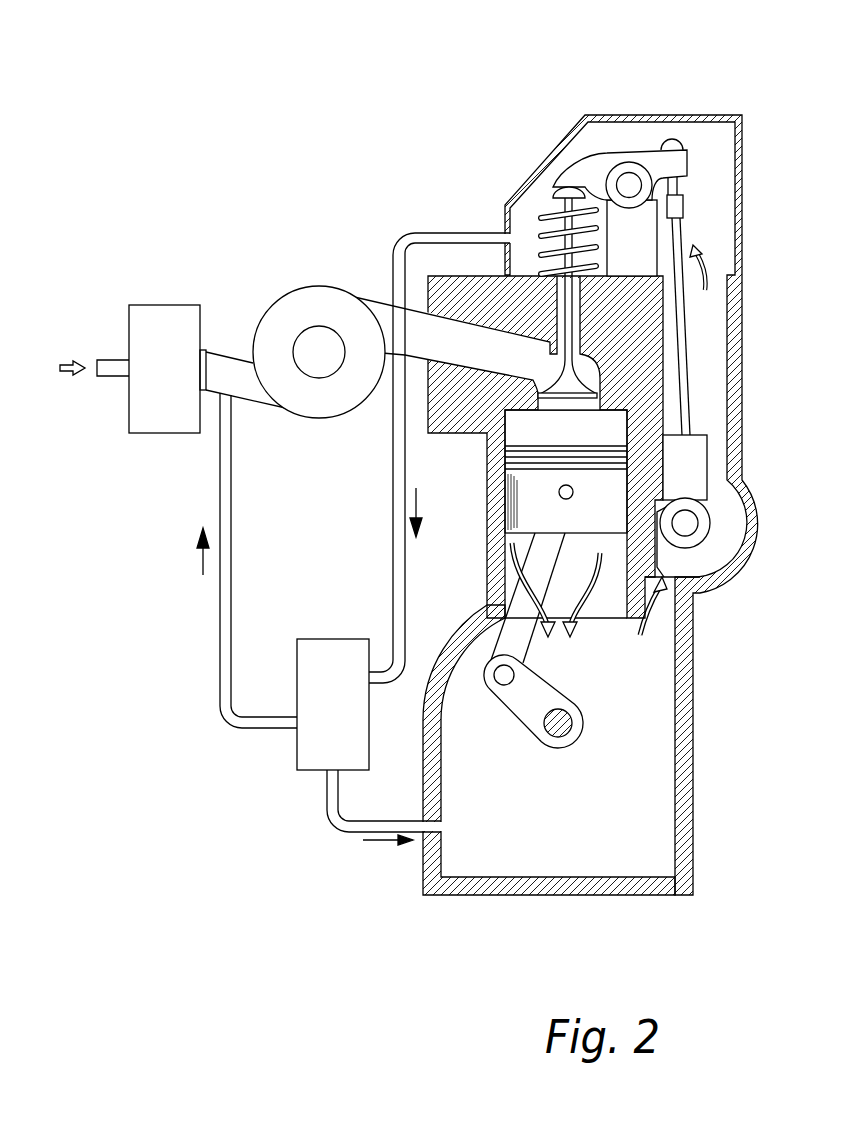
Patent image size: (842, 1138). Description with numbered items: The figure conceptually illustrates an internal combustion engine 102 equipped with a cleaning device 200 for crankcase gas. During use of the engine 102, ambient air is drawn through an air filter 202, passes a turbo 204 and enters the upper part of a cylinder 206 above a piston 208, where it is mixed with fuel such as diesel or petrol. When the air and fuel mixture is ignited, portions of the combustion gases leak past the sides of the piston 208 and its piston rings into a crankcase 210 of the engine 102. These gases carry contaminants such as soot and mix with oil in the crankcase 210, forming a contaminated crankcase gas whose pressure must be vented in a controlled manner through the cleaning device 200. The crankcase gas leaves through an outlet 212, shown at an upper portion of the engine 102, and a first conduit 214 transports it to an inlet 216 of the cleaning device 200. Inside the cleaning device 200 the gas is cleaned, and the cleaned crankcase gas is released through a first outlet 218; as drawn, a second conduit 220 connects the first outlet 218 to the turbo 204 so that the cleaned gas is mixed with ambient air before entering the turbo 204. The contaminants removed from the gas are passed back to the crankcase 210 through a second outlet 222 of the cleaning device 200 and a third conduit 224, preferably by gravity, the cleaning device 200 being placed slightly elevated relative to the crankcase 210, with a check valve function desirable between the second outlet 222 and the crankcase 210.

The internal combustion engine 102 is at (752, 60).
The cleaning device 200 is at (302, 768).
The air filter 202 is at (171, 305).
The turbo 204 is at (316, 287).
The cylinder 206 is at (617, 430).
The piston 208 is at (617, 500).
The crankcase 210 is at (655, 853).
The outlet 212 is at (502, 233).
The first conduit 214 is at (455, 233).
The inlet 216 is at (375, 685).
The first outlet 218 is at (297, 717).
The second conduit 220 is at (220, 615).
The second outlet 222 is at (332, 773).
The third conduit 224 is at (365, 827).